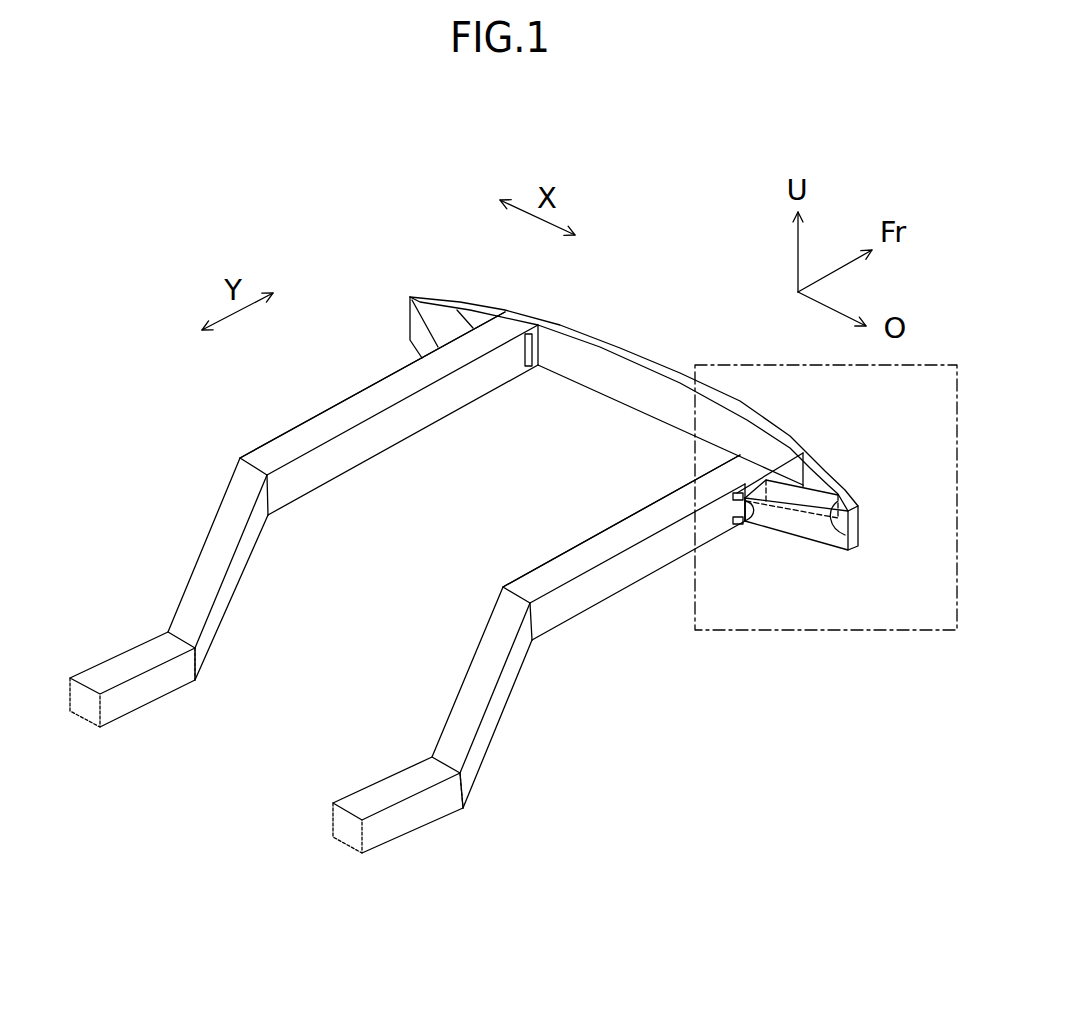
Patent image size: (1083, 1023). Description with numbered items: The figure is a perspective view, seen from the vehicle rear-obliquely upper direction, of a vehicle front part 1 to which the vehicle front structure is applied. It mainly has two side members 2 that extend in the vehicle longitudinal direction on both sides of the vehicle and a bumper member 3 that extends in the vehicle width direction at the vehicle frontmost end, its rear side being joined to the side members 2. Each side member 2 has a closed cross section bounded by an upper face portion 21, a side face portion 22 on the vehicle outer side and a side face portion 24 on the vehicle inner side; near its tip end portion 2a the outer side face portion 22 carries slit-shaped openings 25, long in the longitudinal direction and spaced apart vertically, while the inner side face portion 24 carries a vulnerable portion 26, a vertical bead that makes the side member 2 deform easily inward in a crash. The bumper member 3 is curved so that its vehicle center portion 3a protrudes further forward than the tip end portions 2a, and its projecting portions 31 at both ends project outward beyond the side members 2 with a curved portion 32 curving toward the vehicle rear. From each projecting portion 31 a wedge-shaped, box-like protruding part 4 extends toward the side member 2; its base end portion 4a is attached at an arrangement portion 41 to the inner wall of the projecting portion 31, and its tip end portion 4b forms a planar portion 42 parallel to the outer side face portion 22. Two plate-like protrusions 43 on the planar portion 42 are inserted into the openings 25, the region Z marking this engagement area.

The vehicle front part 1 is at (617, 258).
The side member 2 is at (276, 440).
The upper face portion 21 is at (350, 417).
The side face portion on the vehicle outer side 22 is at (568, 612).
The side face portion on the vehicle inner side 24 is at (397, 432).
The slit-shaped opening 25 is at (712, 542).
The vulnerable portion 26 is at (522, 357).
The tip end portion 2a is at (512, 327).
The bumper member 3 is at (620, 336).
The vehicle center portion 3a is at (652, 383).
The projecting portion 31 is at (437, 291).
The curved portion 32 is at (470, 296).
The protruding part 4 is at (400, 328).
The base end portion 4a is at (450, 313).
The tip end portion 4b is at (780, 452).
The arrangement portion 41 is at (413, 293).
The planar portion 42 is at (733, 508).
The protrusion 43 is at (743, 490).
The enlarged region Z is at (934, 365).